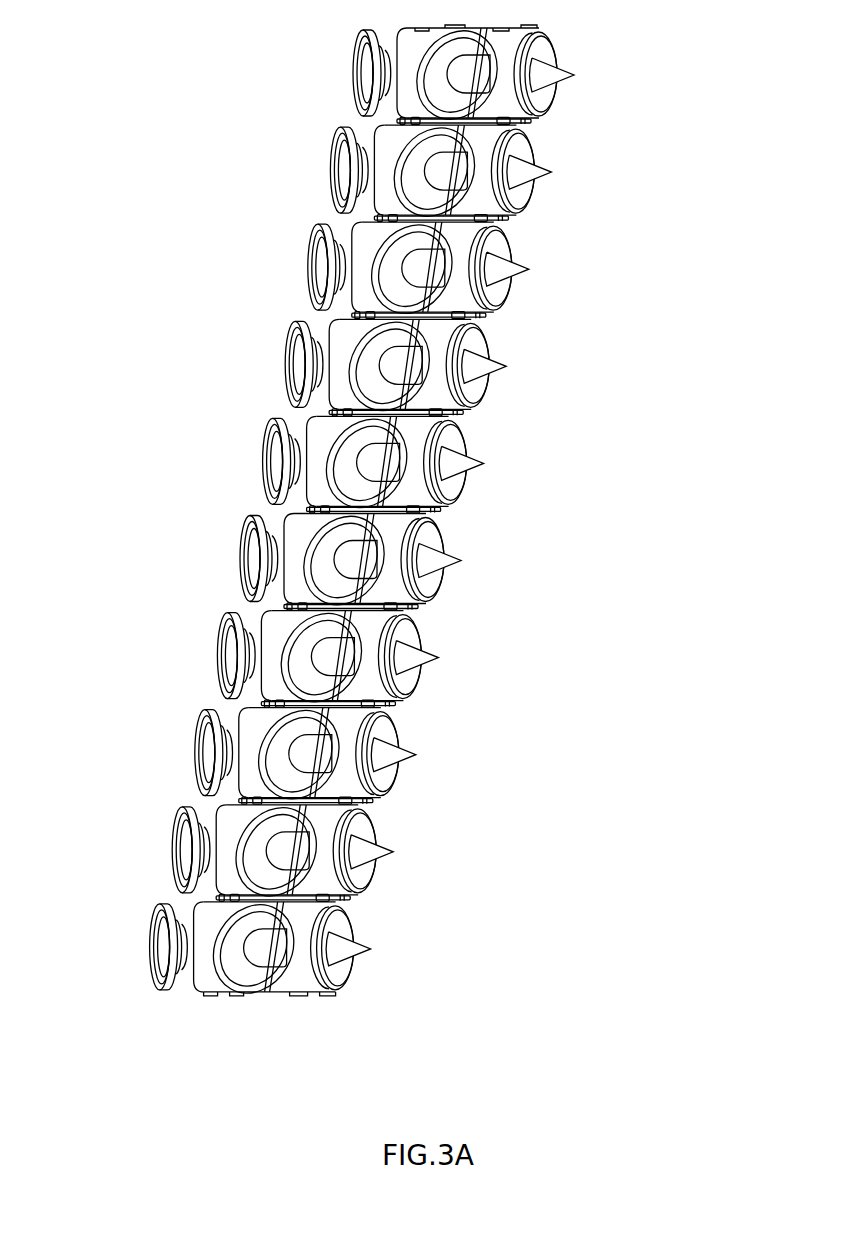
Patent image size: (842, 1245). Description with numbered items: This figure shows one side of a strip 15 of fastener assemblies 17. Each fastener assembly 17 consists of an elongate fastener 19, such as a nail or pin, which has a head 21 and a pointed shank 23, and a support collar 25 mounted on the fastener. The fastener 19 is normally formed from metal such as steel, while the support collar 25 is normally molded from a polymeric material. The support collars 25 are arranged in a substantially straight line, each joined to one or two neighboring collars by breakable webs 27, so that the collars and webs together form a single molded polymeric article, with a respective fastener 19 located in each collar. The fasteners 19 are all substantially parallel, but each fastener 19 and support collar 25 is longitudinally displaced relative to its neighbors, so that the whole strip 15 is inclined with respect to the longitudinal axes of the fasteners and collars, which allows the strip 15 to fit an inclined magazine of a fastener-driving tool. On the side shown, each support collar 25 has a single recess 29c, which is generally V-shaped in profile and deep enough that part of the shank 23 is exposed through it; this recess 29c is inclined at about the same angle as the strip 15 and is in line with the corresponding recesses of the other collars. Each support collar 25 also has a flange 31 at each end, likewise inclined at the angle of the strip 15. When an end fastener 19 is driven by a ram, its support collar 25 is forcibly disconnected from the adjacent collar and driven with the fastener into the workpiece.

The strip of fastener assemblies 15 is at (360, 548).
The fastener assembly 17 is at (552, 127).
The elongate fastener 19 is at (186, 634).
The head 21 is at (163, 932).
The pointed shank 23 is at (267, 947).
The support collar 25 is at (508, 60).
The breakable web 27 is at (240, 800).
The single recess 29c is at (407, 295).
The flange 31 is at (307, 530).